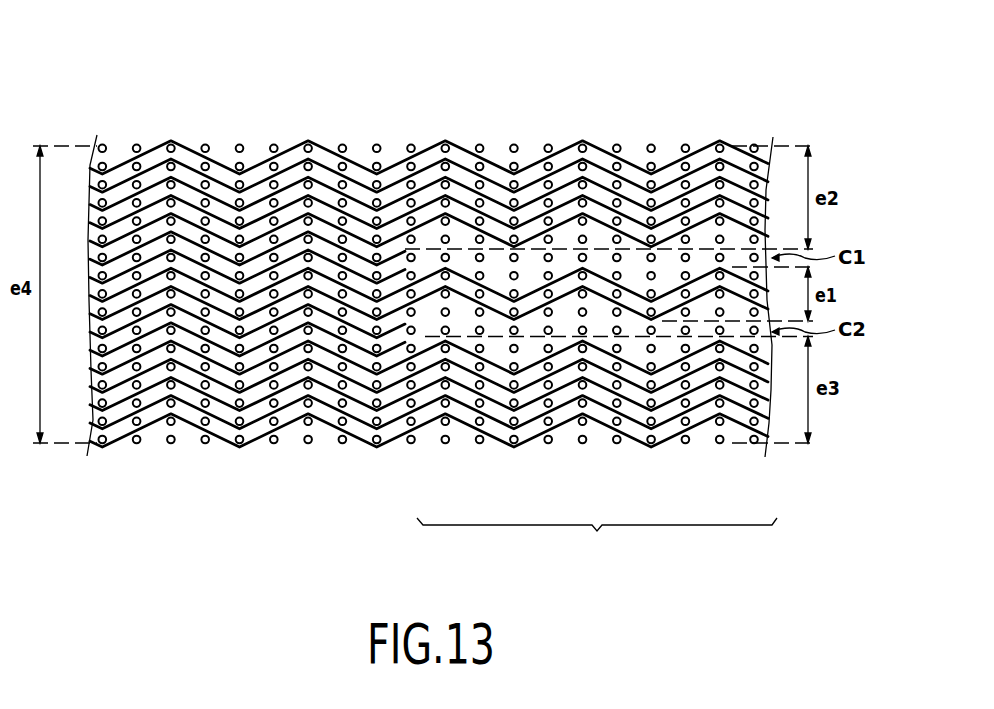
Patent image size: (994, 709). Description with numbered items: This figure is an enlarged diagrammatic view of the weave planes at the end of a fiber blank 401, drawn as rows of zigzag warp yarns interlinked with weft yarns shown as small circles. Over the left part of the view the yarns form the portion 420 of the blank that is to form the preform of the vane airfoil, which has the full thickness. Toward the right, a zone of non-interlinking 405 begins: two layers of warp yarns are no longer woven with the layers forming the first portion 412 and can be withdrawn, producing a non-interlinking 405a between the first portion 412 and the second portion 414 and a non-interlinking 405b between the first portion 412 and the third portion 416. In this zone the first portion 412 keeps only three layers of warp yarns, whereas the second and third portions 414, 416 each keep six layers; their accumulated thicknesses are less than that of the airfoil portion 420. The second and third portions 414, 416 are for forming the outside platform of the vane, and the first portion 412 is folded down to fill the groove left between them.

The fiber blank 401 is at (450, 320).
The zone of non-interlinking 405 is at (609, 335).
The non-interlinking 405a is at (493, 248).
The non-interlinking 405b is at (662, 337).
The first portion 412 is at (699, 278).
The second portion 414 is at (562, 158).
The third portion 416 is at (563, 413).
The portion of the blank forming the vane airfoil preform 420 is at (429, 286).